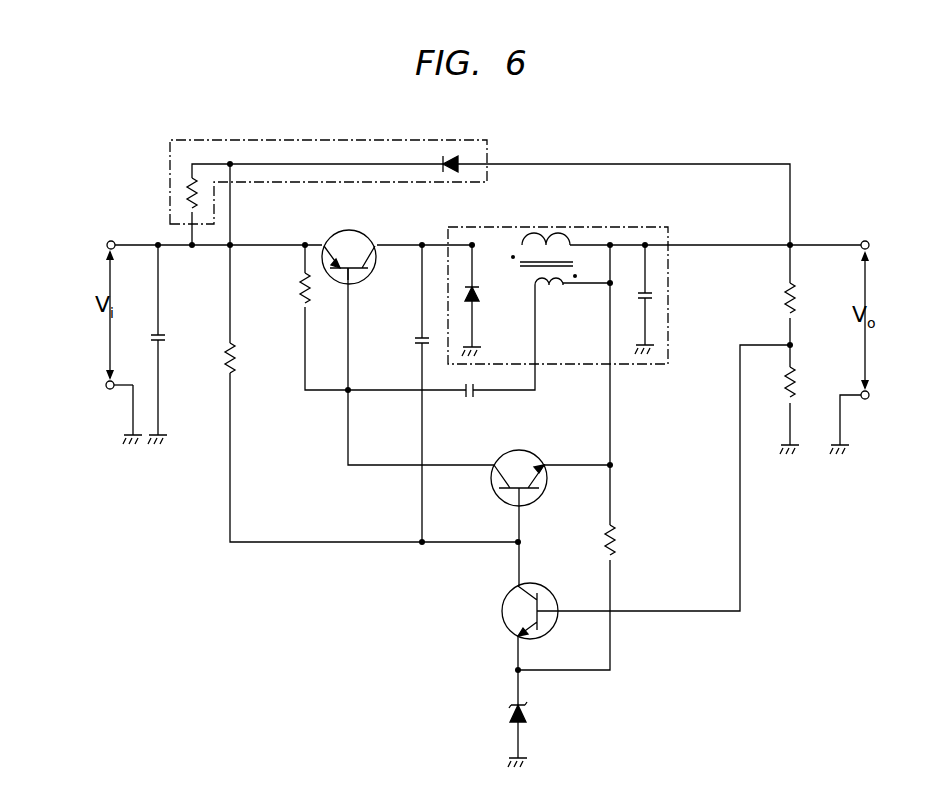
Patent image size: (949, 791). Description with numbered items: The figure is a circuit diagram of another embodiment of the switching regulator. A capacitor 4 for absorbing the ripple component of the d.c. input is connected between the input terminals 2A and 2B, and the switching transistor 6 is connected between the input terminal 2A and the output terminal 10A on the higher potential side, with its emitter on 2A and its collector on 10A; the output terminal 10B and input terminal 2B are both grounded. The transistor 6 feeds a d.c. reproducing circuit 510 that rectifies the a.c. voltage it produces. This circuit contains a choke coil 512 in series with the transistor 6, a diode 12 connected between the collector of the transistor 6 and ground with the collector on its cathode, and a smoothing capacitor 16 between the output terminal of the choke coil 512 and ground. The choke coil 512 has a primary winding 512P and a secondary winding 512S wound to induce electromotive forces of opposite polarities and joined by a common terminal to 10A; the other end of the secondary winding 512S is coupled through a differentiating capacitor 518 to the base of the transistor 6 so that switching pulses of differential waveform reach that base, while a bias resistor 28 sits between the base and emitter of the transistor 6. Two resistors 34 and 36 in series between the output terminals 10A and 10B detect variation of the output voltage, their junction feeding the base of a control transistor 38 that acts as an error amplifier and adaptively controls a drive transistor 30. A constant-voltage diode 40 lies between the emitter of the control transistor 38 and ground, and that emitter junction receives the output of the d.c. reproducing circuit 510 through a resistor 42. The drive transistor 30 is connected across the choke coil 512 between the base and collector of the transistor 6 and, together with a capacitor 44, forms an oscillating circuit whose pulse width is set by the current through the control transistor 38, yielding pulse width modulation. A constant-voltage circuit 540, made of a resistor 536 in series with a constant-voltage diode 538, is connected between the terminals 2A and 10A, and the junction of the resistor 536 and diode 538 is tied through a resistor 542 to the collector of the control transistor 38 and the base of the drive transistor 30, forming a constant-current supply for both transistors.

The input terminal 2A is at (106, 244).
The input terminal 2B is at (106, 384).
The capacitor 4 is at (150, 338).
The switching transistor 6 is at (338, 232).
The output terminal 10A is at (869, 243).
The output terminal 10B is at (869, 393).
The diode 12 is at (478, 296).
The smoothing capacitor 16 is at (640, 295).
The bias resistor 28 is at (310, 312).
The drive transistor 30 is at (493, 492).
The resistor 34 is at (784, 300).
The resistor 36 is at (798, 382).
The control transistor 38 is at (503, 606).
The constant-voltage diode 40 is at (510, 712).
The resistor 42 is at (617, 550).
The capacitor 44 is at (414, 338).
The d.c. reproducing circuit 510 is at (598, 363).
The choke coil 512 is at (546, 262).
The primary winding 512P is at (568, 218).
The secondary winding 512S is at (563, 287).
The differentiating capacitor 518 is at (466, 398).
The resistor 536 is at (185, 198).
The constant-voltage diode 538 is at (450, 156).
The constant-voltage circuit 540 is at (352, 134).
The resistor 542 is at (222, 360).